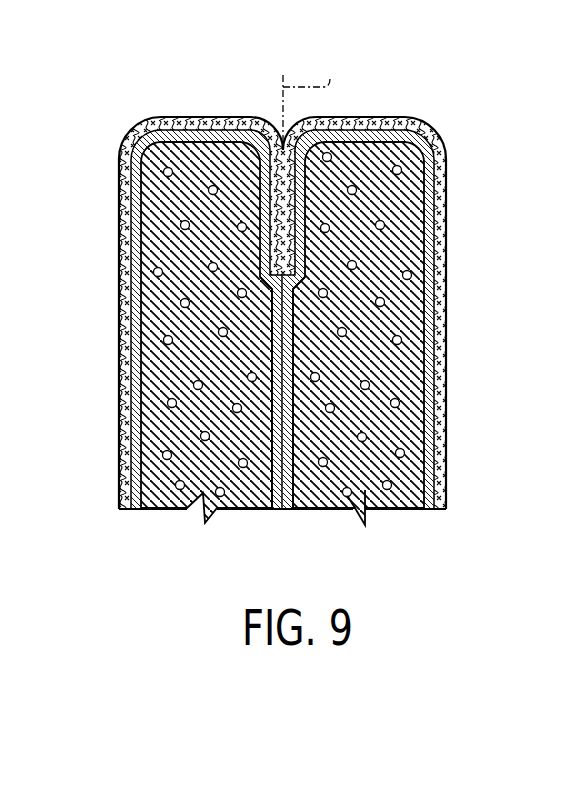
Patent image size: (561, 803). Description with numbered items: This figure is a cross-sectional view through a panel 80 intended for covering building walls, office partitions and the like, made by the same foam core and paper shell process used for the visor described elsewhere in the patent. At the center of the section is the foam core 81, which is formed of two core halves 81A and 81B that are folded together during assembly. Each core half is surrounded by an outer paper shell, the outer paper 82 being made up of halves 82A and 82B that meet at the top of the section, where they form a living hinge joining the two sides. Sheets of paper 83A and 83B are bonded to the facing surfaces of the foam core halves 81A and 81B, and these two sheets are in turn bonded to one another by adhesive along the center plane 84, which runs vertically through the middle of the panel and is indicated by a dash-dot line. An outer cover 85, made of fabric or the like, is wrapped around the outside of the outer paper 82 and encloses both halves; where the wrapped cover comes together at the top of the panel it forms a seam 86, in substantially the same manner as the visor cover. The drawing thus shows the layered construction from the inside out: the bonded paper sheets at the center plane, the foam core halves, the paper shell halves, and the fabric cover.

The panel 80 is at (388, 97).
The foam core 81 is at (315, 300).
The core half 81A is at (196, 468).
The core half 81B is at (412, 483).
The outer paper 82 is at (298, 319).
The paper shell half 82A is at (130, 232).
The paper shell half 82B is at (443, 310).
The sheet of paper 83A is at (250, 506).
The sheet of paper 83B is at (296, 420).
The center plane 84 is at (317, 93).
The outer cover 85 is at (447, 213).
The seam 86 is at (290, 143).